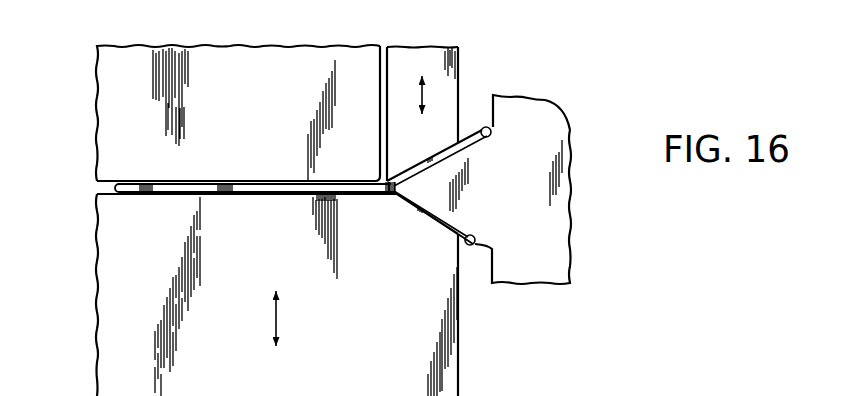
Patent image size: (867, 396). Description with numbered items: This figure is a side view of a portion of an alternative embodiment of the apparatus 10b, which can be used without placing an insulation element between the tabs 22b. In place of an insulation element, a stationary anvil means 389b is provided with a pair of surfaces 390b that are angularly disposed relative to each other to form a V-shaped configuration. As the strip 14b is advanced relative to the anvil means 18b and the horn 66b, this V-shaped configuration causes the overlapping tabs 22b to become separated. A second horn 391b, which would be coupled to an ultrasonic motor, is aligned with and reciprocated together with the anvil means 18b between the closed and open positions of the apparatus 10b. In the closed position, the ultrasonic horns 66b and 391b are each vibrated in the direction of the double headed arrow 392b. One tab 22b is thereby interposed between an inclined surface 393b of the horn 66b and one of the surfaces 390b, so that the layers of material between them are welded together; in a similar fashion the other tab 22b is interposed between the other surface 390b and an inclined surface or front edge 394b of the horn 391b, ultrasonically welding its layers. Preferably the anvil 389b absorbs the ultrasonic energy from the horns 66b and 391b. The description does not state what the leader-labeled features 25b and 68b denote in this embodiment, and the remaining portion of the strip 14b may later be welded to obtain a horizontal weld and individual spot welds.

The apparatus 10b is at (350, 207).
The strip 14b is at (112, 184).
The anvil means 18b is at (95, 131).
The tabs 22b is at (443, 148).
The slot junction edges 25b is at (461, 144).
The horn 66b is at (459, 364).
The lower block corner portion 68b is at (102, 191).
The stationary anvil means 389b is at (574, 212).
The surfaces 390b is at (491, 128).
The second horn 391b is at (460, 64).
The double headed arrow 392b is at (418, 90).
The inclined surface 393b is at (411, 206).
The inclined surface or front edge 394b is at (417, 167).